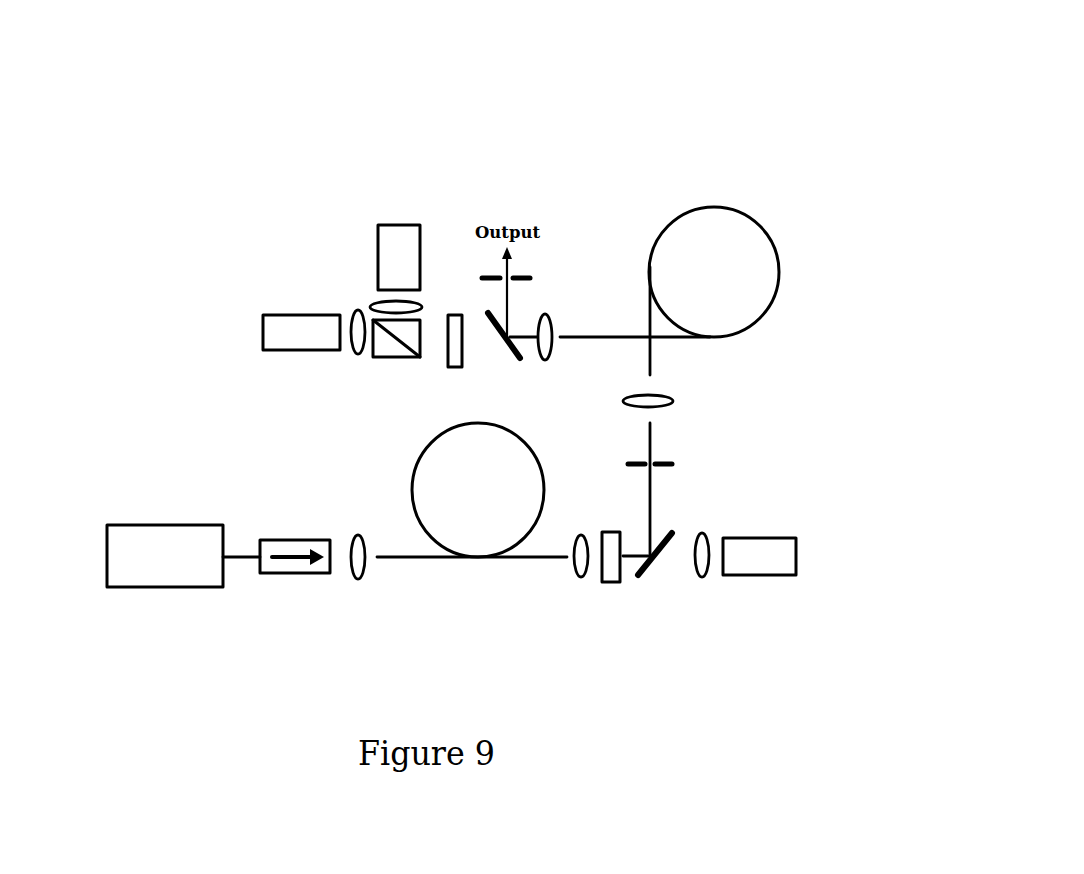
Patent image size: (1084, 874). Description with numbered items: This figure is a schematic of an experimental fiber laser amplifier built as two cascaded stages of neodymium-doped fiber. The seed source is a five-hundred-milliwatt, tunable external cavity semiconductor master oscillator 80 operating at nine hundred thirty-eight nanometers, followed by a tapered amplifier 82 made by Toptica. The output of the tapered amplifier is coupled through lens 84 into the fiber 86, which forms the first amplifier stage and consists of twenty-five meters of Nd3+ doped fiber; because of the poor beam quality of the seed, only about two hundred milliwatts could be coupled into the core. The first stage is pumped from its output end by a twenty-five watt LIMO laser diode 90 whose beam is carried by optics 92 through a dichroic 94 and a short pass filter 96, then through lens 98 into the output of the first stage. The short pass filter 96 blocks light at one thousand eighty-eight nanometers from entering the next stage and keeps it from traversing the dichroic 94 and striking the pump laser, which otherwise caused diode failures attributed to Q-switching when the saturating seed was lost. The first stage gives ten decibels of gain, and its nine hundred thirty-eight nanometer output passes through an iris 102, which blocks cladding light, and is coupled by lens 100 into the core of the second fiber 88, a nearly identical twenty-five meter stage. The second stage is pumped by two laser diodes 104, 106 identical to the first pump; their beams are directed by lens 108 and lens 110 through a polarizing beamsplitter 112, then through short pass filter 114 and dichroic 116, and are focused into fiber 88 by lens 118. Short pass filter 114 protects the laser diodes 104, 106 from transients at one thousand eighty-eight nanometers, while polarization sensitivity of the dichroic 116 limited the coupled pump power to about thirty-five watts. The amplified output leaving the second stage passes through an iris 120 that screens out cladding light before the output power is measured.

The master oscillator 80 is at (130, 587).
The tapered amplifier 82 is at (290, 575).
The lens 84 is at (358, 579).
The fiber 86 is at (411, 500).
The second fiber 88 is at (778, 252).
The laser diode 90 is at (773, 575).
The optics 92 is at (708, 580).
The dichroic 94 is at (647, 575).
The short pass filter 96 is at (605, 583).
The lens 98 is at (577, 575).
The lens 100 is at (673, 400).
The iris 102 is at (672, 457).
The laser diode 104 is at (283, 352).
The laser diode 106 is at (372, 248).
The lens 108 is at (353, 355).
The lens 110 is at (383, 305).
The polarizing beamsplitter 112 is at (425, 320).
The short pass filter 114 is at (465, 343).
The dichroic 116 is at (492, 310).
The lens 118 is at (573, 317).
The iris 120 is at (520, 277).